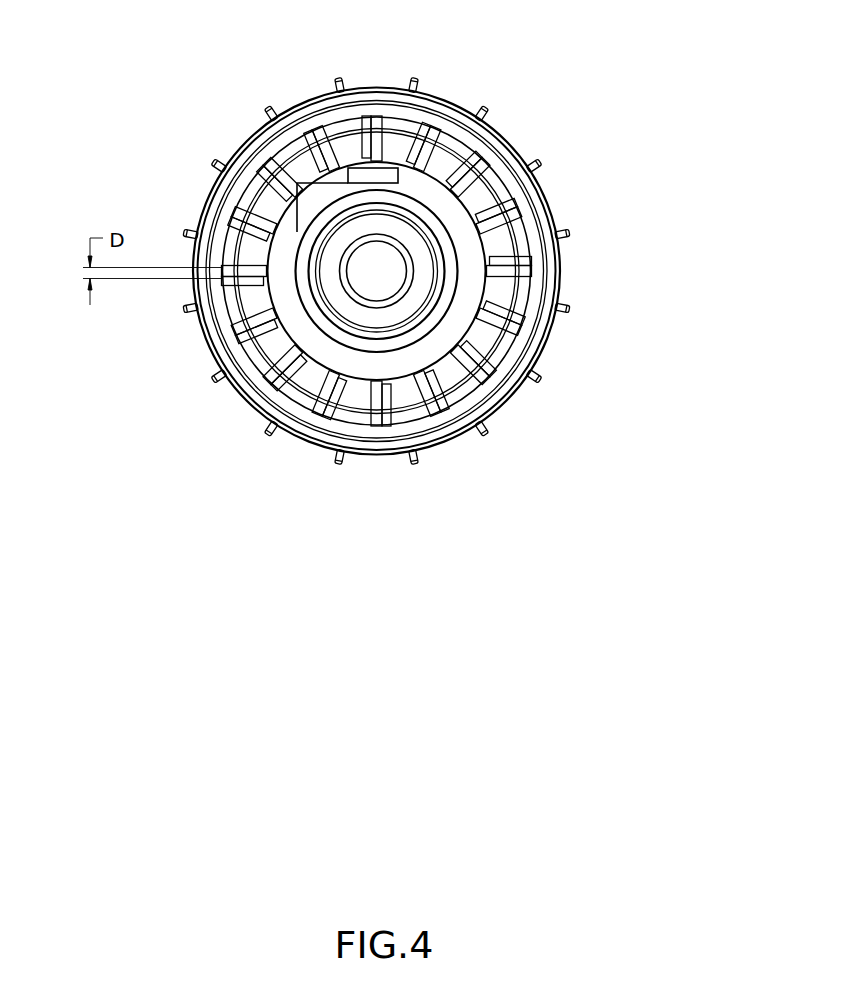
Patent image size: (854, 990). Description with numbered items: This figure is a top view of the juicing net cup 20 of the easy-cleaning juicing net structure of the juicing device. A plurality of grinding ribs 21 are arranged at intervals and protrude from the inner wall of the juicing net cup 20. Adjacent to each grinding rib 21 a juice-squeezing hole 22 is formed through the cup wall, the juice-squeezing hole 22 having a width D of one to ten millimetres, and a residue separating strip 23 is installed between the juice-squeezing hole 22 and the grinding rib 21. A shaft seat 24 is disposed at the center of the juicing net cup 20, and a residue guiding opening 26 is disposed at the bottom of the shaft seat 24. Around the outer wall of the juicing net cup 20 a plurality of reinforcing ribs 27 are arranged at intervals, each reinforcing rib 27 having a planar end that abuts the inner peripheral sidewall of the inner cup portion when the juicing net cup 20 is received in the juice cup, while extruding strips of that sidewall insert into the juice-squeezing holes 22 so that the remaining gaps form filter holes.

The juicing net cup 20 is at (558, 148).
The grinding rib 21 is at (427, 130).
The juice-squeezing hole 22 is at (445, 145).
The residue separating strip 23 is at (463, 143).
The shaft seat 24 is at (330, 230).
The residue guiding opening 26 is at (362, 172).
The reinforcing rib 27 is at (568, 310).